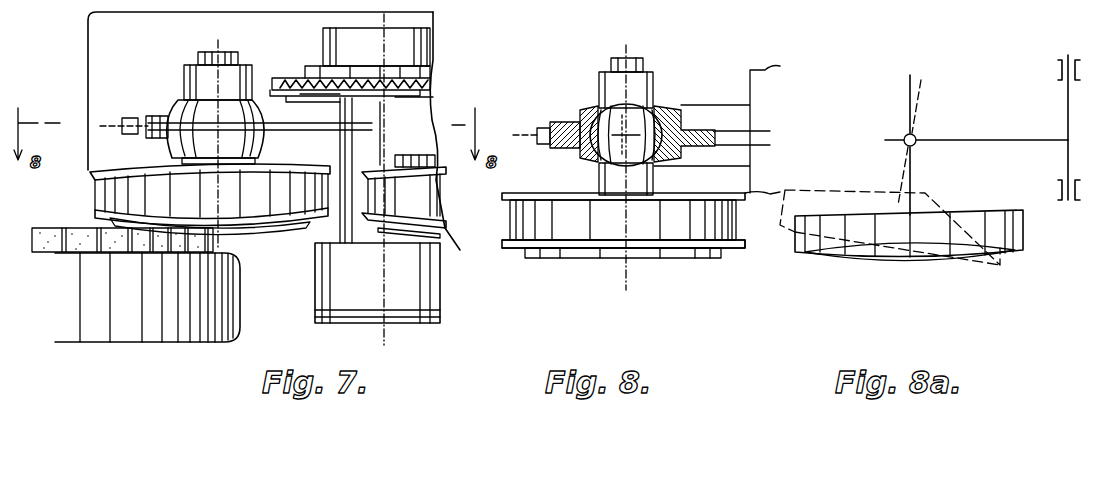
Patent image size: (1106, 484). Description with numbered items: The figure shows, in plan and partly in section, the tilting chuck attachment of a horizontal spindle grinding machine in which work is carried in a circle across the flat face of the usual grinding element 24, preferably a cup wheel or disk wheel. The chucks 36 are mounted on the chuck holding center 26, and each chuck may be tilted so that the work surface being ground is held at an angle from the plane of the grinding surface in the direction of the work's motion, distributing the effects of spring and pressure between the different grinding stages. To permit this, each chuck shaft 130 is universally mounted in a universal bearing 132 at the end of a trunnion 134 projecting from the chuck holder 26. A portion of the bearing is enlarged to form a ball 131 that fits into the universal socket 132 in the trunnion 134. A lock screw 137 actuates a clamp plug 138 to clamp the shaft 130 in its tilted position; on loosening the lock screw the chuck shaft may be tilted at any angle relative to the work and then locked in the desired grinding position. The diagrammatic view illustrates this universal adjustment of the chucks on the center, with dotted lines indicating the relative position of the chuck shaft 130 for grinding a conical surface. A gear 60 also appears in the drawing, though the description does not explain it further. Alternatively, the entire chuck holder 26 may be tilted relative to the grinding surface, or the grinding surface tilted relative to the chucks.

In FIG. 7, the grinding element 24 is at (62, 228).
In FIG. 7, the chuck holding center 26 is at (340, 232).
In FIG. 7, the chuck 36 is at (240, 264).
In FIG. 8, the chuck 36 is at (746, 238).
In FIG. 7, the gear 60 is at (290, 76).
In FIG. 7, the chuck shaft 130 is at (182, 163).
In FIG. 8, the chuck shaft 130 is at (655, 180).
In FIG. 8A, the chuck shaft 130 is at (912, 192).
In FIG. 8, the ball 131 is at (640, 118).
In FIG. 8, the universal bearing 132 is at (592, 108).
In FIG. 8, the trunnion 134 is at (670, 112).
In FIG. 8, the lock screw 137 is at (537, 128).
In FIG. 8, the clamp plug 138 is at (584, 120).